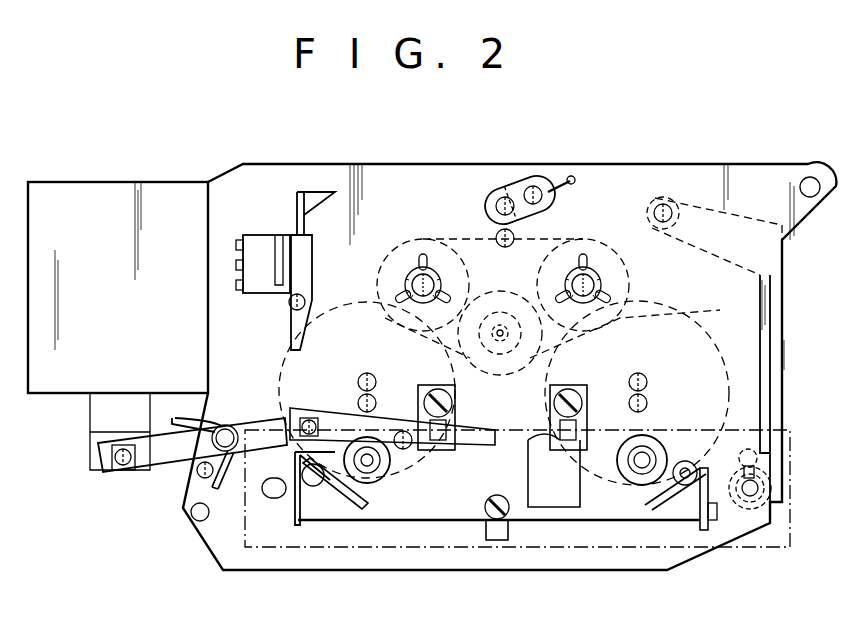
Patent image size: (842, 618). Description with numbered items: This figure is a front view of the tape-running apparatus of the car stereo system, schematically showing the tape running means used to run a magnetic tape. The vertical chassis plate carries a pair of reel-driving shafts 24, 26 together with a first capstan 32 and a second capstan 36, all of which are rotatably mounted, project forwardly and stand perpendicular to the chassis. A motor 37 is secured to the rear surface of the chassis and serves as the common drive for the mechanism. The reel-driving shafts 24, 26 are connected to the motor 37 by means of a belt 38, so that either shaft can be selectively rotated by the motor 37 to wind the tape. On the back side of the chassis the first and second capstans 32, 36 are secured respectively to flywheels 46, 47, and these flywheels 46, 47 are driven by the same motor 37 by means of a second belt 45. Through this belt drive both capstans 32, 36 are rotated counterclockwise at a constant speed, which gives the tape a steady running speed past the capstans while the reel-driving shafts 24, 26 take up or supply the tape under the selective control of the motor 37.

The reel-driving shaft 24 is at (424, 270).
The reel-driving shaft 26 is at (597, 290).
The motor 37 is at (505, 303).
The belt 38 is at (465, 237).
The flywheel 46 is at (354, 330).
The flywheel 47 is at (700, 352).
The first capstan 32 is at (358, 398).
The second capstan 36 is at (648, 400).
The belt 45 is at (545, 372).